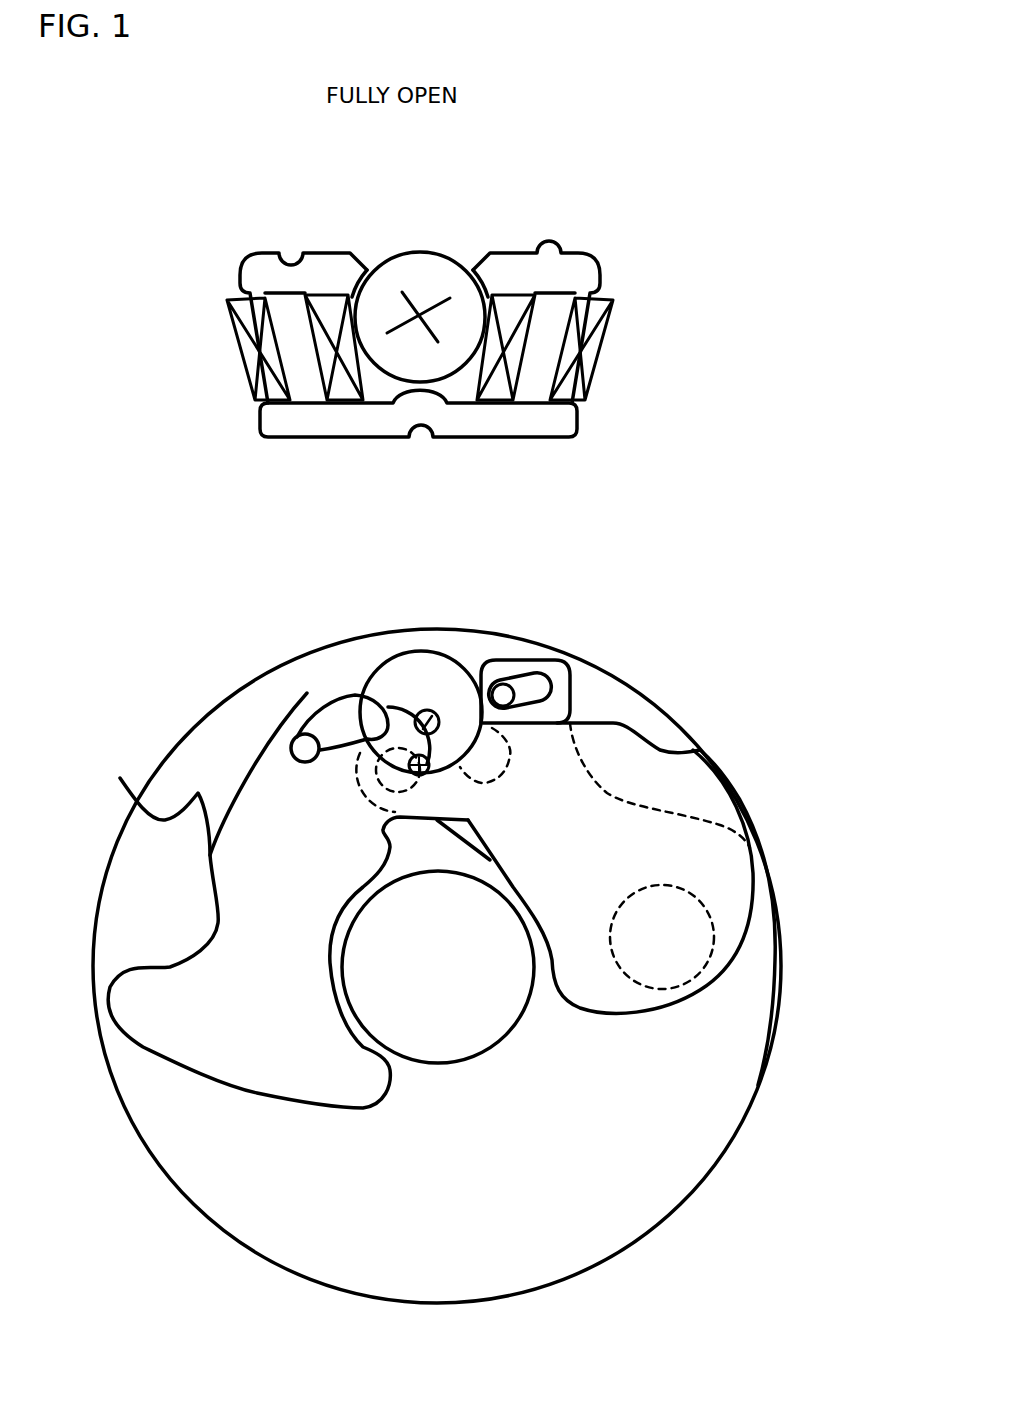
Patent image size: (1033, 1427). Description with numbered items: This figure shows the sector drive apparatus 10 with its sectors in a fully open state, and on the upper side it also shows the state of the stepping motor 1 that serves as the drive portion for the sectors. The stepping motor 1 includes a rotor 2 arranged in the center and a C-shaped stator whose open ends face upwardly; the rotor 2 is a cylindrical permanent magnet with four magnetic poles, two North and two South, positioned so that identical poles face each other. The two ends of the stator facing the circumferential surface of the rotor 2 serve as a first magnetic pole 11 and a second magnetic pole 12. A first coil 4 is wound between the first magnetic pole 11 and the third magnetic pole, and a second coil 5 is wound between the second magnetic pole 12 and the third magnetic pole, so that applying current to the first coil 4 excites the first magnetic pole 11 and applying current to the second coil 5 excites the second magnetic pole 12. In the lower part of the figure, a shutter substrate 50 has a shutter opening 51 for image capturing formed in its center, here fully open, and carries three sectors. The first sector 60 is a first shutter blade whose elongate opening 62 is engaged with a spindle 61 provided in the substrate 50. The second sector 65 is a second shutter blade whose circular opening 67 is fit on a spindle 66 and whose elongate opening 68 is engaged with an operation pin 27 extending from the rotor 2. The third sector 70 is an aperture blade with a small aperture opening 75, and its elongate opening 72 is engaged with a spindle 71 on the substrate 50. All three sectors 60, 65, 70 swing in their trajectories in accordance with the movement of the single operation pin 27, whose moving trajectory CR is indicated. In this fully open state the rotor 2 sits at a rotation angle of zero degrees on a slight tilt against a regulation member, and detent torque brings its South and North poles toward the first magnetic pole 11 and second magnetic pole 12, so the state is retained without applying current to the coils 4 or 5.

The stepping motor 1 is at (622, 252).
The rotor 2 is at (403, 253).
The first coil 4 is at (238, 347).
The second coil 5 is at (603, 345).
The sector drive apparatus 10 is at (430, 590).
The first magnetic pole 11 is at (356, 267).
The second magnetic pole 12 is at (480, 267).
The operation pin 27 is at (427, 770).
The shutter substrate 50 is at (700, 1152).
The shutter opening 51 is at (455, 1028).
The first sector 60 is at (163, 820).
The spindle 61 is at (295, 737).
The elongate opening 62 is at (327, 723).
The second sector 65 is at (677, 770).
The spindle 66 is at (435, 716).
The circular opening 67 is at (430, 712).
The elongate opening 68 is at (403, 780).
The third sector 70 is at (743, 1007).
The spindle 71 is at (510, 690).
The elongate opening 72 is at (560, 665).
The small aperture opening 75 is at (673, 932).
The moving trajectory CR is at (396, 652).